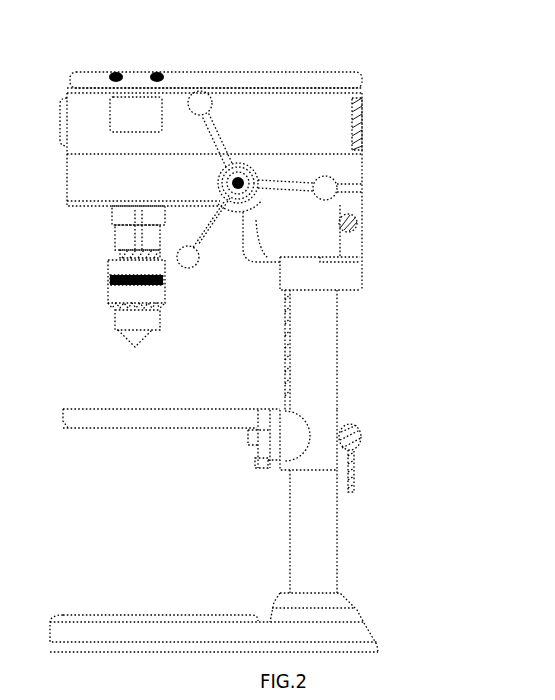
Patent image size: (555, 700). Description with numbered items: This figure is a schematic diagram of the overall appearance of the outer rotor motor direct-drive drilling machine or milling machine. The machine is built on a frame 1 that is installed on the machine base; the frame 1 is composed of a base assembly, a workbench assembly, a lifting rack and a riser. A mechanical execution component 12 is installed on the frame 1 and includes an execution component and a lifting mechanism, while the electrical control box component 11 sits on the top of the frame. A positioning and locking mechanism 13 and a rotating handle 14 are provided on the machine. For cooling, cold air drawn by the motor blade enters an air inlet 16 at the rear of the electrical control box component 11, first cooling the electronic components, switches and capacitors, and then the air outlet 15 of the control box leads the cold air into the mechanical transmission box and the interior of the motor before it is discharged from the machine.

The frame 1 is at (283, 471).
The electrical control box component 11 is at (290, 79).
The mechanical execution component 12 is at (214, 147).
The positioning and locking mechanism 13 is at (428, 275).
The rotating handle 14 is at (347, 240).
The air outlet 15 is at (131, 80).
The air inlet 16 is at (424, 145).